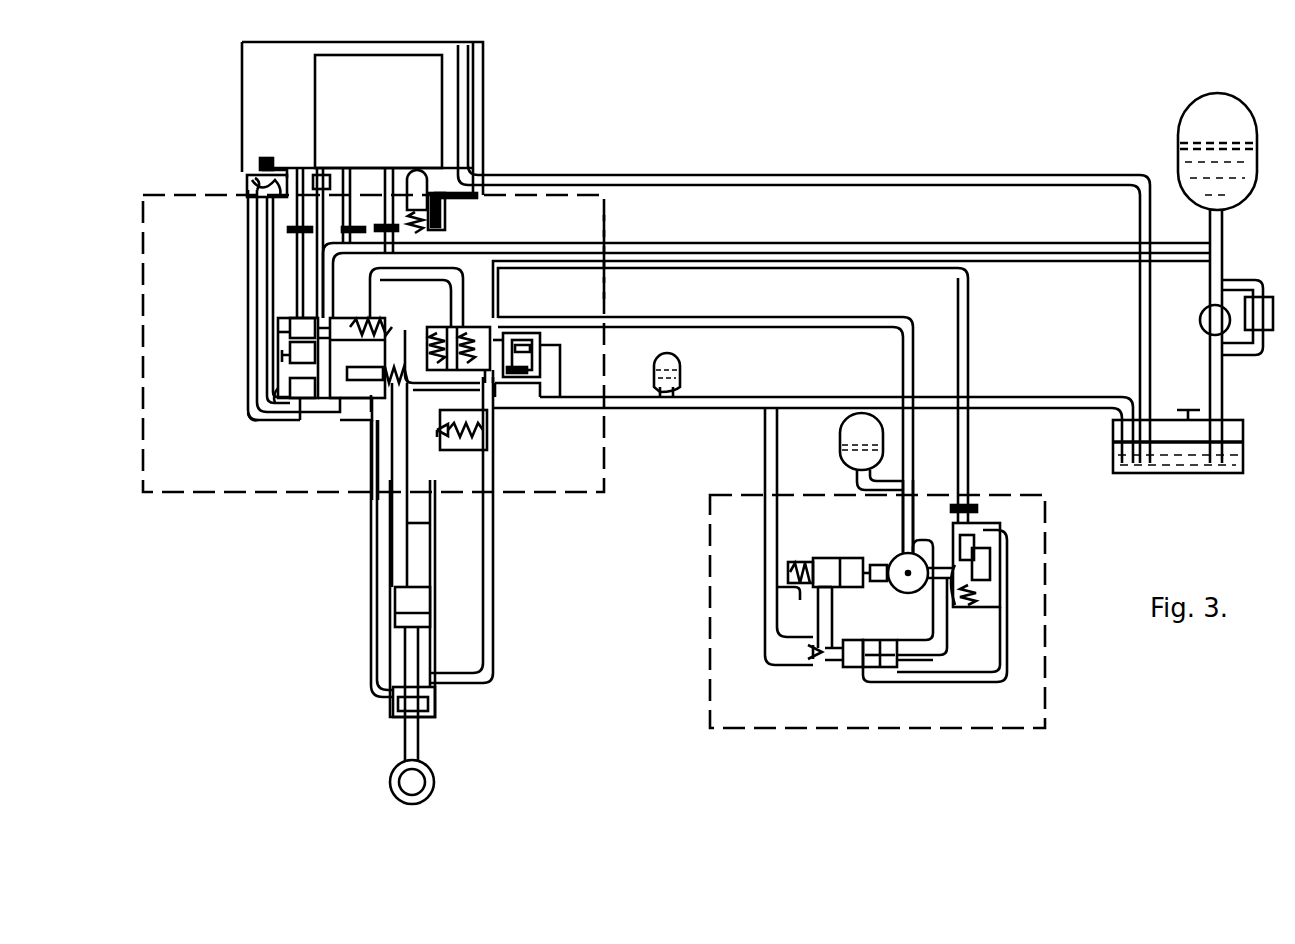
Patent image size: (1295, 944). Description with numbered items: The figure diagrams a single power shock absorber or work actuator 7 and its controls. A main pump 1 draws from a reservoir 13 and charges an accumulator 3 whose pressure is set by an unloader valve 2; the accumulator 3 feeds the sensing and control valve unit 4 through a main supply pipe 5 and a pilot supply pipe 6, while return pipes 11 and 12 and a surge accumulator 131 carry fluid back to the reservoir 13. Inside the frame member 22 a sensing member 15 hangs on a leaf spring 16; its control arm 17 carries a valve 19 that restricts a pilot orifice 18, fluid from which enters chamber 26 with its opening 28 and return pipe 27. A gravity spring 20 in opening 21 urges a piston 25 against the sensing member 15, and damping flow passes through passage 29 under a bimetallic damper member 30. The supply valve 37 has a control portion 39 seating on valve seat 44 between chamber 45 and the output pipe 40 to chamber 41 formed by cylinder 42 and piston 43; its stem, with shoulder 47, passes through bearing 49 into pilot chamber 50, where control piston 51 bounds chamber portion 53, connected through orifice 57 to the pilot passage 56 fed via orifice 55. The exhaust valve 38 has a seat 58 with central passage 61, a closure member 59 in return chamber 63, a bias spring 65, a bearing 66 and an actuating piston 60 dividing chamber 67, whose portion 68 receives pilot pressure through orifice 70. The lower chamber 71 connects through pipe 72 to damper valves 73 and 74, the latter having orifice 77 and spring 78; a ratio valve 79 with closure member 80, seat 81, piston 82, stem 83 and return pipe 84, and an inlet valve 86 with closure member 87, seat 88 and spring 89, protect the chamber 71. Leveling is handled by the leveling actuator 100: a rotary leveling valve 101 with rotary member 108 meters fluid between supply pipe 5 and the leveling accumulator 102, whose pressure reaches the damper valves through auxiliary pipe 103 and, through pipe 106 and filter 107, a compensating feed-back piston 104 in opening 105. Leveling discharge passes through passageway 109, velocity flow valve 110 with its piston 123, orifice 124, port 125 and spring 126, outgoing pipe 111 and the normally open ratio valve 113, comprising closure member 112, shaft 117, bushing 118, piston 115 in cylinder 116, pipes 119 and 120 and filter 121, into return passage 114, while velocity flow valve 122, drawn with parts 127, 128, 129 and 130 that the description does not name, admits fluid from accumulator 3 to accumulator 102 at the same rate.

The main pump 1 is at (1203, 312).
The unloader valve 2 is at (1273, 308).
The accumulator 3 is at (1178, 118).
The sensing and control valve unit 4 is at (604, 207).
The supply pipe 5 is at (1082, 263).
The pilot supply pipe 6 is at (843, 244).
The actuator 7 is at (435, 576).
The flow return pipe 11 is at (740, 397).
The flow return pipe 12 is at (870, 176).
The reservoir 13 is at (1180, 475).
The sensing member 15 is at (384, 110).
The leaf spring 16 is at (327, 170).
The control arm 17 is at (282, 166).
The pilot orifice 18 is at (325, 187).
The valve 19 is at (273, 160).
The gravity spring 20 is at (445, 231).
The opening 21 is at (385, 226).
The frame member 22 is at (604, 234).
The piston 25 is at (427, 180).
The chamber 26 is at (255, 190).
The fluid return pipe 27 is at (248, 236).
The opening 28 is at (247, 178).
The passage 29 is at (442, 215).
The bimetallic orifice restriction damper member 30 is at (470, 197).
The supply valve 37 is at (300, 318).
The exhaust valve 38 is at (284, 406).
The fluid flow control portion 39 is at (383, 330).
The fluid output control pipe 40 is at (407, 476).
The work actuator chamber 41 is at (410, 530).
The cylinder housing 42 is at (435, 556).
The piston 43 is at (425, 610).
The valve seat portion 44 is at (380, 330).
The chamber 45 is at (356, 355).
The shoulder 47 is at (350, 333).
The bearing 49 is at (337, 318).
The pilot pressure control chamber 50 is at (308, 306).
The control piston 51 is at (285, 346).
The chamber portion 53 is at (278, 320).
The orifice 55 is at (282, 360).
The passage 56 is at (267, 250).
The orifice 57 is at (278, 333).
The fixed valve seat 58 is at (372, 422).
The valve closure member 59 is at (362, 412).
The actuating piston 60 is at (298, 407).
The passage 61 is at (378, 376).
The return pressure chamber 63 is at (348, 398).
The bias spring 65 is at (395, 368).
The bearing 66 is at (322, 405).
The chamber 67 is at (260, 416).
The chamber portion 68 is at (280, 380).
The orifice 70 is at (275, 400).
The chamber 71 is at (396, 690).
The fluid pipe 72 is at (493, 561).
The damper valve 73 is at (430, 327).
The damper valve 74 is at (445, 380).
The orifice 77 is at (470, 370).
The bias spring 78 is at (467, 327).
The ratio valve 79 is at (540, 353).
The poppet type valve closure member 80 is at (517, 383).
The valve seat 81 is at (538, 370).
The piston 82 is at (514, 333).
The stem 83 is at (540, 346).
The connecting pipe 84 is at (540, 333).
The inlet valve 86 is at (470, 450).
The valve closure member 87 is at (450, 435).
The valve seat 88 is at (440, 432).
The bias spring 89 is at (483, 430).
The leveling actuator 100 is at (1045, 668).
The leveling valve 101 is at (908, 594).
The accumulator 102 is at (840, 440).
The auxiliary supply pipe 103 is at (880, 317).
The compensating feed-back piston 104 is at (391, 170).
The opening 105 is at (346, 218).
The pipe 106 is at (378, 248).
The filter 107 is at (310, 232).
The rotary member 108 is at (885, 581).
The passageway 109 is at (898, 558).
The constant velocity valve 110 is at (777, 585).
The outgoing pipe 111 is at (818, 620).
The closure member 112 is at (808, 655).
The ratio valve 113 is at (888, 668).
The return passage 114 is at (765, 455).
The piston 115 is at (878, 668).
The cylinder 116 is at (928, 661).
The reduced area shaft 117 is at (845, 660).
The guiding bushing 118 is at (845, 645).
The pipe 119 is at (947, 645).
The pipe 120 is at (1007, 648).
The filter 121 is at (951, 509).
The velocity flow valve 122 is at (1009, 569).
The piston 123 is at (813, 562).
The orifice 124 is at (853, 565).
The output metering port 125 is at (820, 590).
The bias spring 126 is at (788, 572).
The valve member 127 is at (990, 548).
The valve seat 128 is at (985, 535).
The port 129 is at (958, 604).
The spring 130 is at (985, 597).
The surge accumulator 131 is at (671, 360).